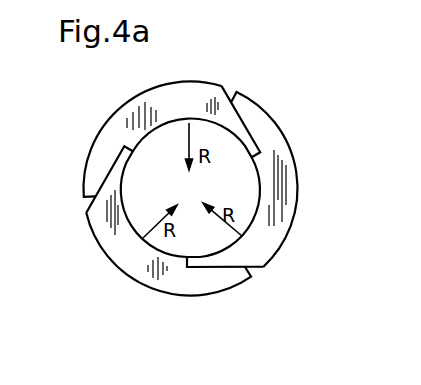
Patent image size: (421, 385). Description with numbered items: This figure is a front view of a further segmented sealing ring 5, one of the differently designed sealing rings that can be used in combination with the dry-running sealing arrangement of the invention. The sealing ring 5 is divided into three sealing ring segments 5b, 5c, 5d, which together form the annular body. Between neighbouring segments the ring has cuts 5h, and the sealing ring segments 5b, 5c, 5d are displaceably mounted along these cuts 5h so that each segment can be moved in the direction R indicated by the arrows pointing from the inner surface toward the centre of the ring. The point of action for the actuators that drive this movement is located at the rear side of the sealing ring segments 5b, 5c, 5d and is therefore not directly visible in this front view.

The sealing ring 5 is at (187, 190).
The sealing ring segment 5b is at (208, 93).
The sealing ring segment 5c is at (280, 227).
The sealing ring segment 5d is at (126, 258).
The cuts 5h is at (245, 110).